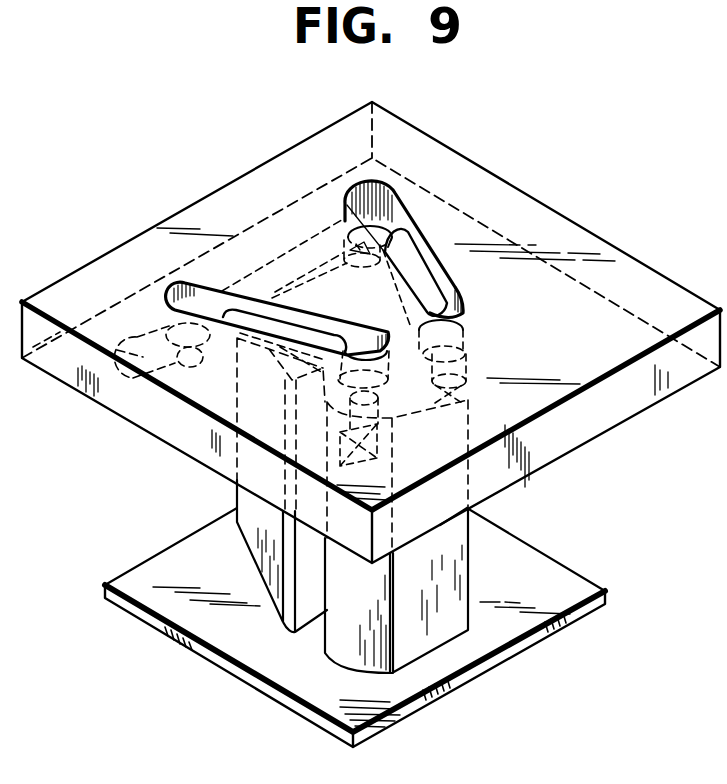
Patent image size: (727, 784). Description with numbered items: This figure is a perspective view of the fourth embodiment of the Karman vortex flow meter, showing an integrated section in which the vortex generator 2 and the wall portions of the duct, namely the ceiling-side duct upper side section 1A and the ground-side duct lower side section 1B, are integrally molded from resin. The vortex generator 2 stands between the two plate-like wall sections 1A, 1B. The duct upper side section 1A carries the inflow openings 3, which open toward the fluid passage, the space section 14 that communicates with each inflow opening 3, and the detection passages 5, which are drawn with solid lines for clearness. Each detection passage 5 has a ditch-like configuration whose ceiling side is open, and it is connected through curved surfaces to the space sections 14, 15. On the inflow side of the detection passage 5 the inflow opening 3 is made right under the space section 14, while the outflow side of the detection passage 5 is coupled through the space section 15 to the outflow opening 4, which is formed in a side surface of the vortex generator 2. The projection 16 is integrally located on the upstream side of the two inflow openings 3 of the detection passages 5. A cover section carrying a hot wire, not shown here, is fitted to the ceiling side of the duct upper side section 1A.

The duct upper side section 1A is at (613, 428).
The duct lower side section 1B is at (607, 590).
The vortex generator 2 is at (323, 637).
The inflow opening 3 is at (180, 367).
The outflow opening 4 is at (362, 462).
The detection passage 5 is at (263, 296).
The space section 14 is at (137, 338).
The space section 15 is at (385, 380).
The projection 16 is at (137, 333).